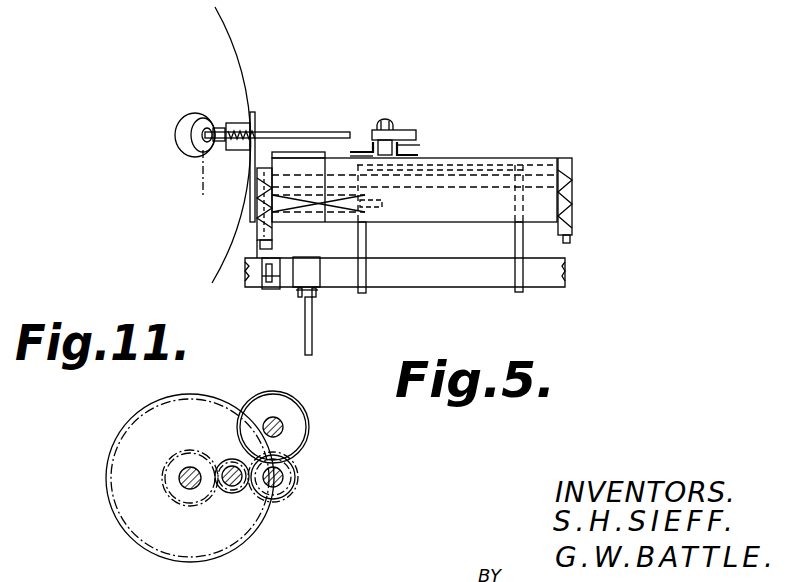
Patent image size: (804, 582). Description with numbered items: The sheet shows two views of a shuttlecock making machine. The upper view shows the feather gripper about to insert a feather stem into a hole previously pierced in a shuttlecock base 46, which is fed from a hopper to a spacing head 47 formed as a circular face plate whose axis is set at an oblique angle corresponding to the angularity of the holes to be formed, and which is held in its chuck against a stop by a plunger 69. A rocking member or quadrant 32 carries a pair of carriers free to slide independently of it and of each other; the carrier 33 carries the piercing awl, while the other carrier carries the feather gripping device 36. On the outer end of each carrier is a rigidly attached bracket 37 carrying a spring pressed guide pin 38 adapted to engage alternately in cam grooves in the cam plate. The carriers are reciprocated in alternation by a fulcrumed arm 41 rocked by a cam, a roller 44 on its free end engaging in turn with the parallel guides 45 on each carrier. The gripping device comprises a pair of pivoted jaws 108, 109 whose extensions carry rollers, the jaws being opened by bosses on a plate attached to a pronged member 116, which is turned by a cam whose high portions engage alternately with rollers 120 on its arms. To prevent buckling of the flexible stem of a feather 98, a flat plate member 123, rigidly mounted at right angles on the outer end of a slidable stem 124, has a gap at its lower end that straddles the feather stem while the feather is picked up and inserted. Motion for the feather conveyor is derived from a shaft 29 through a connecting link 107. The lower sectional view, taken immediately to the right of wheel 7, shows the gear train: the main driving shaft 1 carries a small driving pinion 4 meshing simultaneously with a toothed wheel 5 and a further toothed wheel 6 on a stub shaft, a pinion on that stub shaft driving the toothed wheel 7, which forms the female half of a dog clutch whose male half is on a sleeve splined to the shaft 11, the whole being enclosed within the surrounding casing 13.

In FIG. 11, the main driving shaft 1 is at (229, 466).
In FIG. 11, the driving pinion 4 is at (232, 492).
In FIG. 11, the toothed wheel 5 is at (165, 484).
In FIG. 11, the toothed wheel 6 is at (285, 503).
In FIG. 11, the toothed wheel 7 is at (311, 442).
In FIG. 11, the shaft 11 is at (282, 422).
In FIG. 11, the ring gear 13 is at (136, 520).
In FIG. 5, the shaft 29 is at (256, 283).
In FIG. 5, the rocking member or quadrant 32 is at (542, 163).
In FIG. 5, the carrier 33 is at (540, 168).
In FIG. 5, the feather gripping device 36 is at (253, 114).
In FIG. 5, the bracket 37 is at (567, 197).
In FIG. 5, the spring pressed guide pin 38 is at (571, 241).
In FIG. 5, the arm 41 is at (414, 148).
In FIG. 5, the roller 44 is at (416, 128).
In FIG. 5, the parallel guides 45 is at (486, 162).
In FIG. 5, the shuttlecock base 46 is at (206, 187).
In FIG. 5, the spacing head 47 is at (228, 67).
In FIG. 5, the plunger 69 is at (180, 160).
In FIG. 5, the feather 98 is at (347, 133).
In FIG. 5, the connecting link 107 is at (313, 322).
In FIG. 5, the gripper jaw 108 is at (262, 123).
In FIG. 5, the gripper jaw 109 is at (258, 241).
In FIG. 5, the pronged member 116 is at (275, 250).
In FIG. 5, the roller 120 is at (276, 290).
In FIG. 5, the flat plate member 123 is at (218, 128).
In FIG. 5, the stem 124 is at (389, 121).